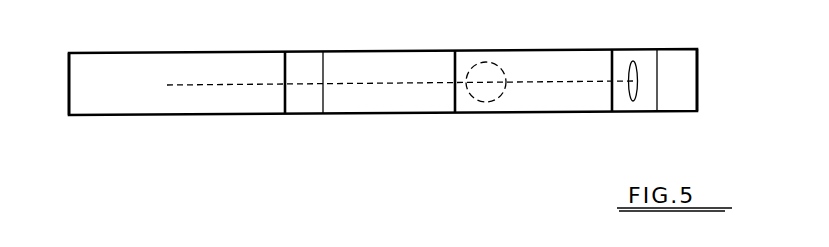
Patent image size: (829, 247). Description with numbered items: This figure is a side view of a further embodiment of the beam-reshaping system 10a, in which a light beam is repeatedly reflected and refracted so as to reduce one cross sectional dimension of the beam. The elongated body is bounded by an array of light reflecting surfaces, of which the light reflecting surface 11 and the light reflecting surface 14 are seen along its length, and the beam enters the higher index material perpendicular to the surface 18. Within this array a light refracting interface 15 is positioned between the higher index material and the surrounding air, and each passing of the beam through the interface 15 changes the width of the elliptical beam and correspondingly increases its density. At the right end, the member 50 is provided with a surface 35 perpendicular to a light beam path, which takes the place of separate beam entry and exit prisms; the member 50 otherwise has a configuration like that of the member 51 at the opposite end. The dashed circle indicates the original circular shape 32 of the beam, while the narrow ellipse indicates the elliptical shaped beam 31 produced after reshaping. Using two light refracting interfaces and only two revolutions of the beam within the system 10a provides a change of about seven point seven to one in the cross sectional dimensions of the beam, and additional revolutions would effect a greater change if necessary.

The system 10a is at (160, 135).
The light reflecting surface 11 is at (93, 65).
The member 51 is at (69, 113).
The surface 18 is at (293, 63).
The interface 15 is at (381, 58).
The light reflecting surface 14 is at (550, 57).
The circular shape 32 is at (486, 68).
The surface 35 is at (648, 55).
The elliptical shaped beam 31 is at (632, 93).
The member 50 is at (697, 103).